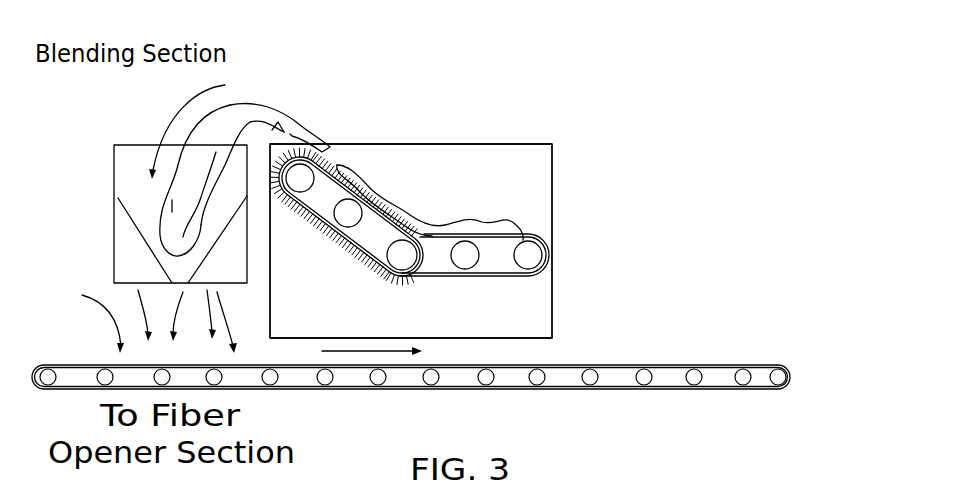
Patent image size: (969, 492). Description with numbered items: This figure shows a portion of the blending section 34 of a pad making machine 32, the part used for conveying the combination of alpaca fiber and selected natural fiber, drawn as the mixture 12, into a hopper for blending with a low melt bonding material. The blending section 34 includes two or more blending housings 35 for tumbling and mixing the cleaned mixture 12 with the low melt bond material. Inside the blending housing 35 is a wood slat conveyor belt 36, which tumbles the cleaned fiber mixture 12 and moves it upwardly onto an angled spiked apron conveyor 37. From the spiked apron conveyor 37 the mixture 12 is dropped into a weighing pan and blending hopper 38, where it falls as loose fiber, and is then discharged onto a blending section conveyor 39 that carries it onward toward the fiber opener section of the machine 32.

The mixture 12 is at (255, 116).
The pad making machine 32 is at (578, 84).
The blending section 34 is at (415, 88).
The blending housing 35 is at (524, 167).
The wood slat conveyor belt 36 is at (445, 278).
The angled spiked apron conveyor 37 is at (325, 226).
The weighing pan and blending hopper 38 is at (138, 213).
The blending section conveyor 39 is at (500, 392).